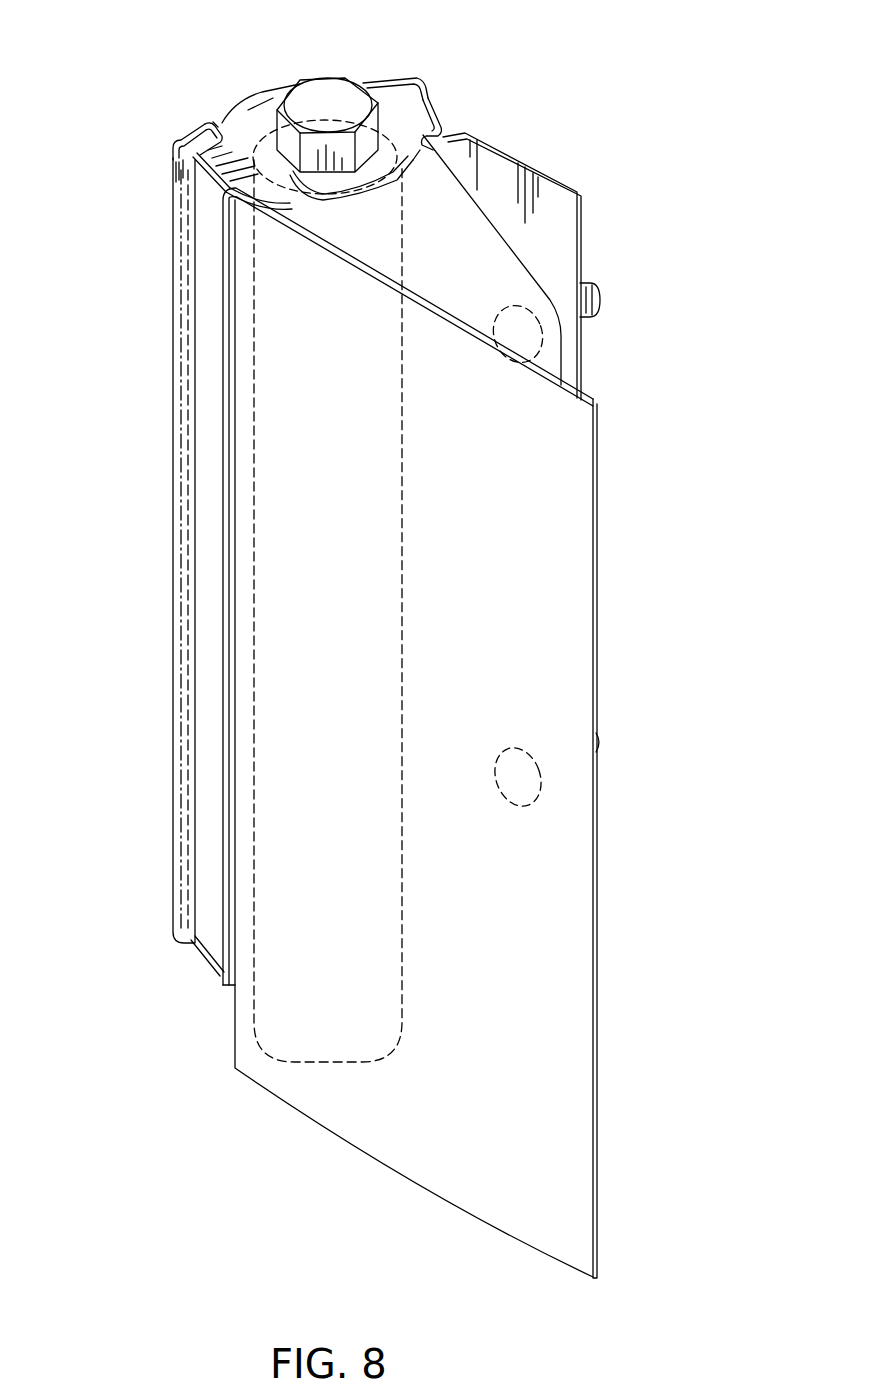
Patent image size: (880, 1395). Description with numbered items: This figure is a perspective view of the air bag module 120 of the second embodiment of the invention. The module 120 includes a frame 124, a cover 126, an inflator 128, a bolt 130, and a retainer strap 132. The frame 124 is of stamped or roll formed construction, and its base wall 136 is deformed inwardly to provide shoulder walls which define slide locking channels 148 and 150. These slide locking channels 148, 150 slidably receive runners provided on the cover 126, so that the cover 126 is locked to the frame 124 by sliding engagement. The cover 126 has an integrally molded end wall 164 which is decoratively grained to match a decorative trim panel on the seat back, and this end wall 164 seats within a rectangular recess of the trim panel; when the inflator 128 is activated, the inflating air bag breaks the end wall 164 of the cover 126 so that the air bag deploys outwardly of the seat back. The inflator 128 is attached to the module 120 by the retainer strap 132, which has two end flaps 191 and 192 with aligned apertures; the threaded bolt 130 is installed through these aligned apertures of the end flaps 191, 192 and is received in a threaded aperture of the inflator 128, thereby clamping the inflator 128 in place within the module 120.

The module 120 is at (622, 697).
The frame 124 is at (206, 121).
The cover 126 is at (521, 250).
The inflator 128 is at (253, 360).
The bolt 130 is at (334, 90).
The retainer strap 132 is at (195, 240).
The base wall 136 is at (219, 118).
The slide locking channel 148 is at (163, 144).
The slide locking channel 150 is at (404, 69).
The end wall 164 is at (512, 592).
The end flap 191 is at (246, 142).
The end flap 192 is at (408, 120).